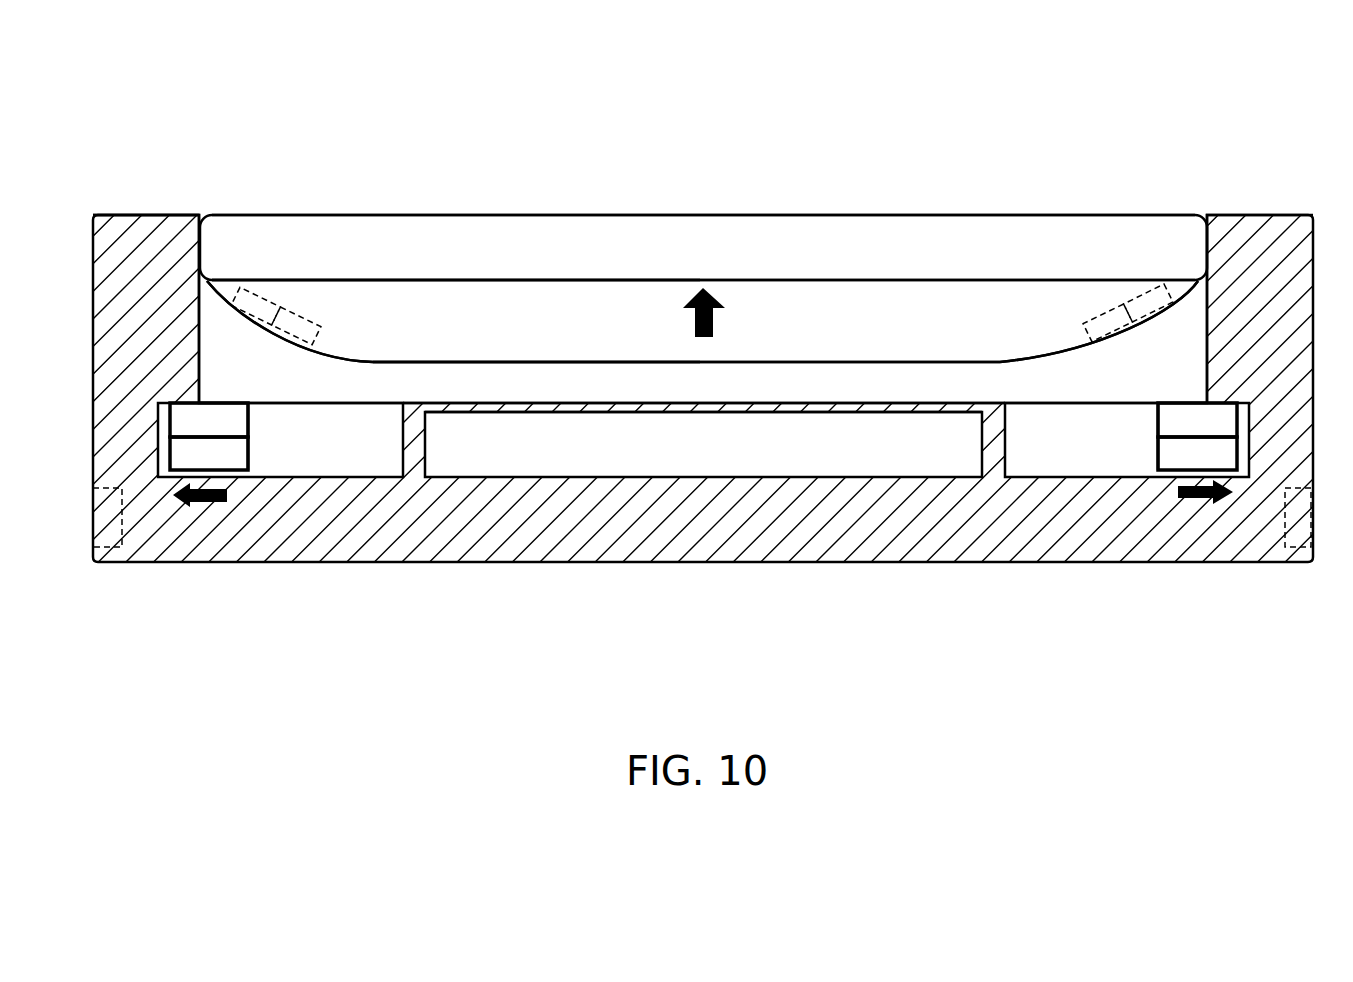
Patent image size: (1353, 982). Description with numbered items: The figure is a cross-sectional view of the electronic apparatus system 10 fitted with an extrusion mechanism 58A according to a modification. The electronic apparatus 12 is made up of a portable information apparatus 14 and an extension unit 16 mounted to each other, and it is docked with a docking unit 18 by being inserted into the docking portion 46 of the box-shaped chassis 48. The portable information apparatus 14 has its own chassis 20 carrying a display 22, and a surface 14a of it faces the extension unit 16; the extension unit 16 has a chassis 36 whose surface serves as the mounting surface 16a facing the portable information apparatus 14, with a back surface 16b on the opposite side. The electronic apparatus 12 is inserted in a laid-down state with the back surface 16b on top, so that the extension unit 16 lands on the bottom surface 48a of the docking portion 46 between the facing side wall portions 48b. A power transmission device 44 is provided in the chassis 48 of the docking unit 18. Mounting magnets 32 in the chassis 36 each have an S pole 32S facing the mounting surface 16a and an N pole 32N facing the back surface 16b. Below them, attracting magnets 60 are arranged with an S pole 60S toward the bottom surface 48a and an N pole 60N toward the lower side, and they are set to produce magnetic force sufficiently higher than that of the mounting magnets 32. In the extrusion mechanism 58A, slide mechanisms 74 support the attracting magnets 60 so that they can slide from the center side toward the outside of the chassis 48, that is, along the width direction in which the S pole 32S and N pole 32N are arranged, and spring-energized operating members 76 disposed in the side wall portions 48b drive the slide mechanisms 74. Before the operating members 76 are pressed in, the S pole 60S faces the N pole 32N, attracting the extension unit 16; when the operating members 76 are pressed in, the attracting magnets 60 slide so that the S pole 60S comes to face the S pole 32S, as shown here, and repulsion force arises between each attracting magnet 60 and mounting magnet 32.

The electronic apparatus system 10 is at (110, 53).
The electronic apparatus 12 is at (703, 216).
The portable information apparatus 14 is at (952, 212).
The lower surface of lens holder 14a is at (778, 286).
The extension unit 16 is at (987, 314).
The mounting surface 16a is at (553, 280).
The back surface 16b is at (855, 362).
The docking unit 18 is at (175, 212).
The chassis 20 is at (1050, 237).
The display 22 is at (648, 215).
The mounting magnet 32 is at (703, 196).
The S pole 32S is at (268, 282).
The N pole 32N is at (320, 316).
The chassis 36 is at (425, 318).
The power transmission device 44 is at (533, 457).
The docking portion 46 is at (373, 382).
The chassis 48 is at (635, 565).
The bottom surface 48a is at (735, 403).
The side wall portion 48b is at (138, 228).
The extrusion mechanism 58A is at (352, 448).
The attracting magnet 60 is at (703, 537).
The S pole 60S is at (205, 418).
The N pole 60N is at (237, 450).
The slide mechanism 74 is at (325, 455).
The operating member 76 is at (112, 562).